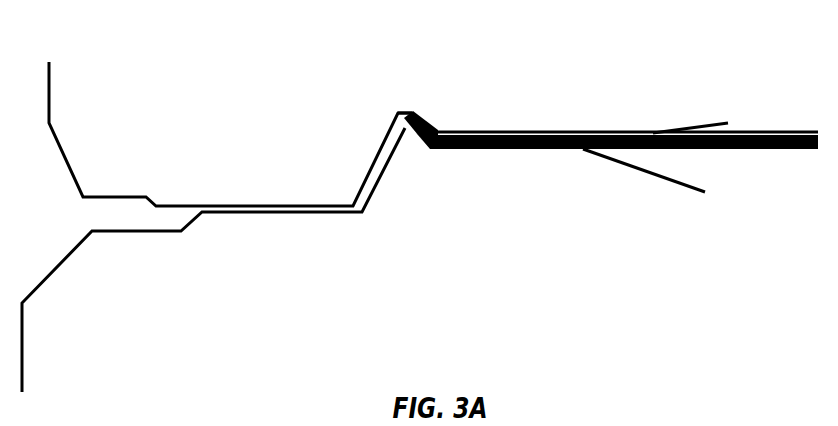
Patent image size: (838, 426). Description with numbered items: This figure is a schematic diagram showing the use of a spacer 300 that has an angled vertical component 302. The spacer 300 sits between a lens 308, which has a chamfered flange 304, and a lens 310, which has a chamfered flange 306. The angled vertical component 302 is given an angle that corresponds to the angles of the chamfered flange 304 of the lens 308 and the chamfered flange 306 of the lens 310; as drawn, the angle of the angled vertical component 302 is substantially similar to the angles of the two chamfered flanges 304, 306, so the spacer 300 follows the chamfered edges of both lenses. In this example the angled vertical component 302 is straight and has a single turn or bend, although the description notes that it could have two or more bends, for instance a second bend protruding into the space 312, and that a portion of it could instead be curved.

The spacer 300 is at (777, 150).
The angled vertical component 302 is at (437, 127).
The chamfered flange 304 is at (432, 125).
The chamfered flange 306 is at (417, 143).
The lens 308 is at (618, 132).
The lens 310 is at (627, 167).
The space 312 is at (396, 117).